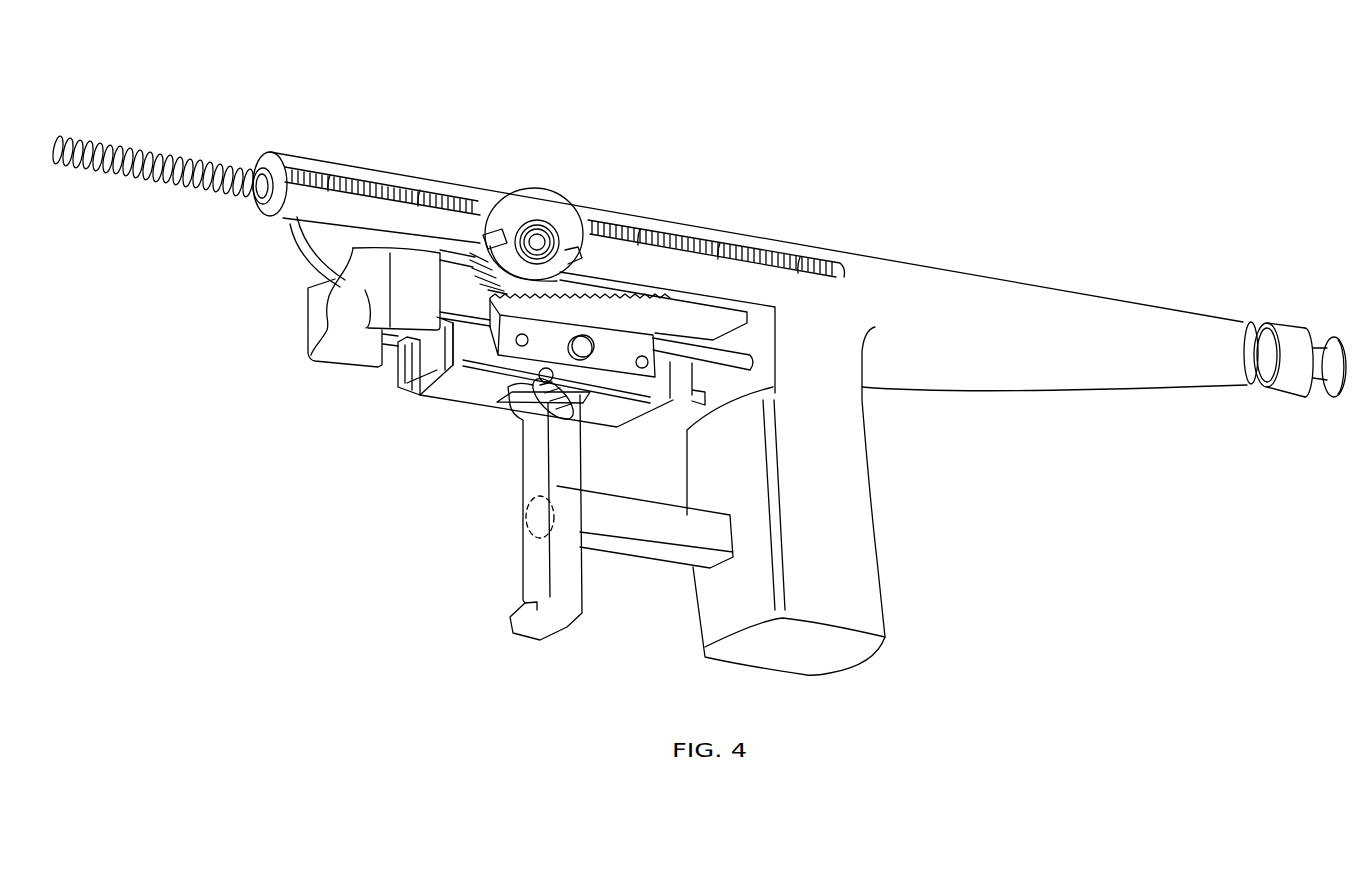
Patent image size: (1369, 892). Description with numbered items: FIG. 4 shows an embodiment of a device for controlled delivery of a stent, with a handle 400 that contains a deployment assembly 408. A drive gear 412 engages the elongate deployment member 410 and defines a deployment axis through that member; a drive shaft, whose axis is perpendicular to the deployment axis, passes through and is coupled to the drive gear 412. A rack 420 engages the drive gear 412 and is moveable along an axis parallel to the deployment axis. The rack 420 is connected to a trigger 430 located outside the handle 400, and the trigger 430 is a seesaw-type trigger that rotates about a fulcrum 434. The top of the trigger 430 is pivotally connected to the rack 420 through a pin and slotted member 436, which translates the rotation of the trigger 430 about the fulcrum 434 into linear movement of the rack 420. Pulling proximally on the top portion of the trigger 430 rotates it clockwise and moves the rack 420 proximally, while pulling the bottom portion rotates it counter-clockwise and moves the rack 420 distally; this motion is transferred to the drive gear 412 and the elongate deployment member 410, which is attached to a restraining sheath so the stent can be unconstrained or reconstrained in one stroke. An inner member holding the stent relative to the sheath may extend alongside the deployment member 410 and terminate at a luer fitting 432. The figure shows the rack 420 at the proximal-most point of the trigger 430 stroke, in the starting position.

The handle 400 is at (890, 258).
The deployment assembly 408 is at (384, 382).
The elongate deployment member 410 is at (160, 150).
The drive gear 412 is at (480, 262).
The rack 420 is at (430, 355).
The trigger 430 is at (515, 627).
The luer fitting 432 is at (1293, 327).
The fulcrum 434 is at (530, 518).
The slotted member 436 is at (513, 424).